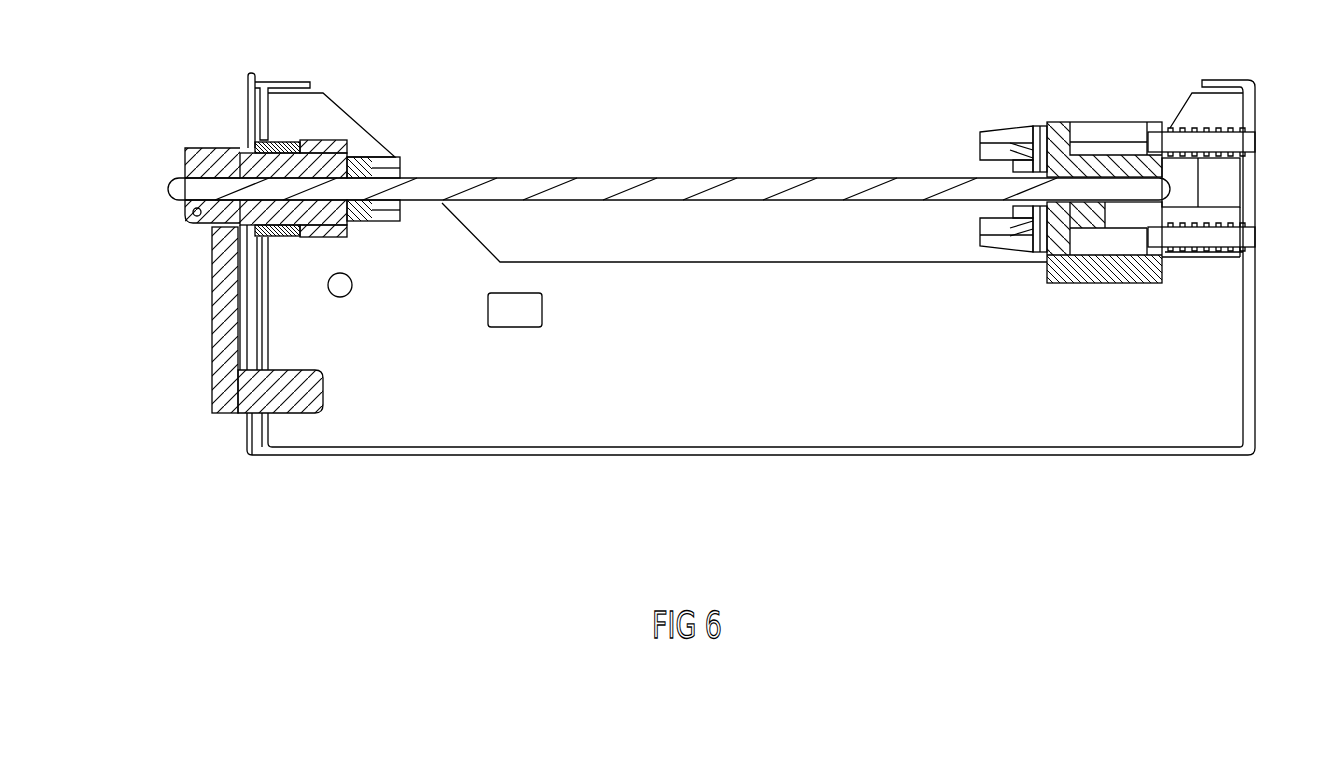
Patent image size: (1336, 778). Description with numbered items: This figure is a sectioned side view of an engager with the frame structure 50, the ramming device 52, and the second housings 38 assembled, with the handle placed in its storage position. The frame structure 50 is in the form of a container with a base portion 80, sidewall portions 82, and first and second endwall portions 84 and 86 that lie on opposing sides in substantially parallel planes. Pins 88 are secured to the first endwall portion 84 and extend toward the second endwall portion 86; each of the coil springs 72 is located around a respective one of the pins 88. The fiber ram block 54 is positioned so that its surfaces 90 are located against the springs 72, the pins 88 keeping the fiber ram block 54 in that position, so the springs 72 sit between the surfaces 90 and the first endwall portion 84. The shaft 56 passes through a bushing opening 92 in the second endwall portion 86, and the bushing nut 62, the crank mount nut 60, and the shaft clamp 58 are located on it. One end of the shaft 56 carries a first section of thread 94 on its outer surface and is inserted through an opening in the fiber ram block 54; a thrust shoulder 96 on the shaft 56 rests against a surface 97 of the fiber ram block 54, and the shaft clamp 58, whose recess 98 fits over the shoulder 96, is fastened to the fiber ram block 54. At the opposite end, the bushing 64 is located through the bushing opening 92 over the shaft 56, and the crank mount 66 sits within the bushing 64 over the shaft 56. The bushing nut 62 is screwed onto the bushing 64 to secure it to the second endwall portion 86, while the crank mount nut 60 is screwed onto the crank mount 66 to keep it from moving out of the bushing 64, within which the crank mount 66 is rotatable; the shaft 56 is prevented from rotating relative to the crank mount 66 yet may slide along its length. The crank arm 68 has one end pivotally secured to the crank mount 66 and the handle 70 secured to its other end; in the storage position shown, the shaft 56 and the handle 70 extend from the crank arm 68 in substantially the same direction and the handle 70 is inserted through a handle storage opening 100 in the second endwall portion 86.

The second housings 38 is at (1023, 128).
The frame structure 50 is at (671, 456).
The ramming device 52 is at (648, 108).
The fiber ram block 54 is at (1092, 122).
The shaft 56 is at (783, 177).
The shaft clamp 58 is at (985, 140).
The crank mount nut 60 is at (382, 160).
The bushing nut 62 is at (288, 150).
The bushing 64 is at (318, 166).
The crank mount 66 is at (334, 208).
The crank arm 68 is at (212, 320).
The handle 70 is at (323, 390).
The springs 72 is at (1228, 125).
The base portion 80 is at (773, 447).
The sidewall portions 82 is at (742, 261).
The first endwall portion 84 is at (1262, 360).
The second endwall portion 86 is at (248, 105).
The pins 88 is at (1151, 130).
The surfaces 90 is at (1183, 167).
The bushing opening 92 is at (240, 160).
The first section of thread 94 is at (1137, 202).
The thrust shoulder 96 is at (1032, 213).
The surface 97 is at (1034, 130).
The recess 98 is at (1012, 157).
The handle storage opening 100 is at (268, 372).